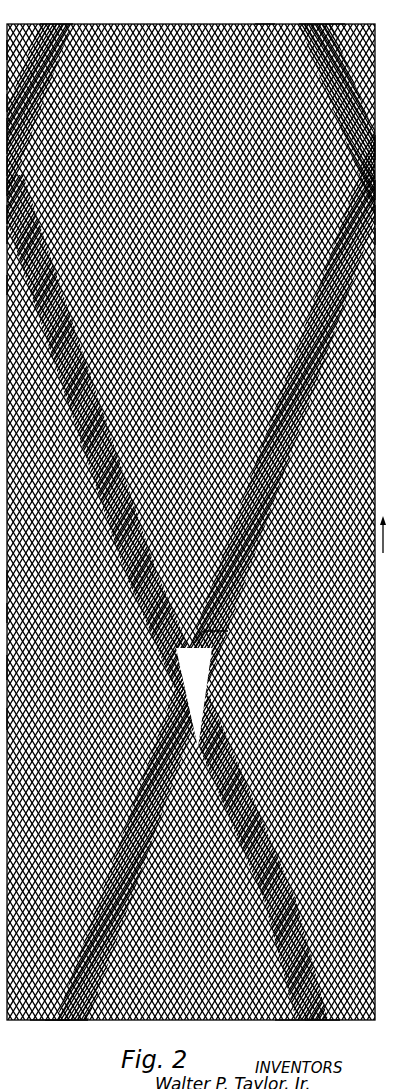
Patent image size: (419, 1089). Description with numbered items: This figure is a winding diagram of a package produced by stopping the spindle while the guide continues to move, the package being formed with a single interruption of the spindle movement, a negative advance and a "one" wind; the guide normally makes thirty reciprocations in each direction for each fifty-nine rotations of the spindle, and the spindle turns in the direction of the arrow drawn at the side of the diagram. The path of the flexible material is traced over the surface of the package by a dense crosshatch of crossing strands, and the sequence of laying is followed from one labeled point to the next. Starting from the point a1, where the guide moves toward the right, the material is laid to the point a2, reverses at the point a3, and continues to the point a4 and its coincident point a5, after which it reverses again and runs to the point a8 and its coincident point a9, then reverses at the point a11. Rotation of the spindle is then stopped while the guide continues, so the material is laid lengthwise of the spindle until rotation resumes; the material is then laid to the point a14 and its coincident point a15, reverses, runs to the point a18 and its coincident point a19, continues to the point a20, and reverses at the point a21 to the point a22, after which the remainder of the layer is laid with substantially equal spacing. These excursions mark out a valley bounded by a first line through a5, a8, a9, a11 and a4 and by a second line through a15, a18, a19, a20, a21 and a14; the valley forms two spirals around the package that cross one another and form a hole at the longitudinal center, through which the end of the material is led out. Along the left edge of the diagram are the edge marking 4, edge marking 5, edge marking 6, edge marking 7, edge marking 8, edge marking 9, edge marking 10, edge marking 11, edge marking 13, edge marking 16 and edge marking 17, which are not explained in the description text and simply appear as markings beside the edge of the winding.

The starting point a1 is at (268, 25).
The point a2 is at (365, 227).
The reversal point a3 is at (370, 303).
The point a4 is at (372, 232).
The point a5 is at (72, 25).
The point a8 is at (299, 1021).
The point a9 is at (299, 25).
The reversal point a11 is at (368, 281).
The point a14 is at (57, 1043).
The point a15 is at (51, 22).
The point a18 is at (330, 1023).
The point a19 is at (327, 20).
The point a20 is at (375, 147).
The reversal point a21 is at (372, 189).
The point a22 is at (42, 1021).
The course 4 is at (3, 80).
The course 5 is at (8, 190).
The course 6 is at (3, 103).
The course 7 is at (3, 235).
The course 8 is at (3, 580).
The course 9 is at (3, 613).
The course 10 is at (4, 360).
The course 11 is at (6, 502).
The course 13 is at (6, 127).
The course 16 is at (8, 228).
The course 17 is at (8, 151).